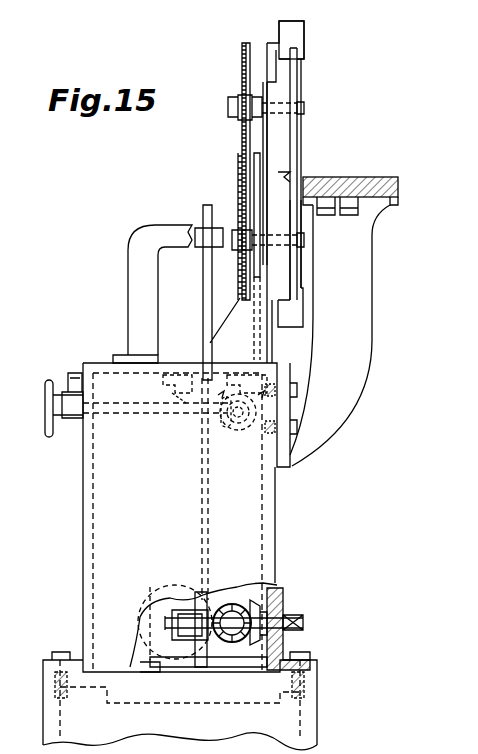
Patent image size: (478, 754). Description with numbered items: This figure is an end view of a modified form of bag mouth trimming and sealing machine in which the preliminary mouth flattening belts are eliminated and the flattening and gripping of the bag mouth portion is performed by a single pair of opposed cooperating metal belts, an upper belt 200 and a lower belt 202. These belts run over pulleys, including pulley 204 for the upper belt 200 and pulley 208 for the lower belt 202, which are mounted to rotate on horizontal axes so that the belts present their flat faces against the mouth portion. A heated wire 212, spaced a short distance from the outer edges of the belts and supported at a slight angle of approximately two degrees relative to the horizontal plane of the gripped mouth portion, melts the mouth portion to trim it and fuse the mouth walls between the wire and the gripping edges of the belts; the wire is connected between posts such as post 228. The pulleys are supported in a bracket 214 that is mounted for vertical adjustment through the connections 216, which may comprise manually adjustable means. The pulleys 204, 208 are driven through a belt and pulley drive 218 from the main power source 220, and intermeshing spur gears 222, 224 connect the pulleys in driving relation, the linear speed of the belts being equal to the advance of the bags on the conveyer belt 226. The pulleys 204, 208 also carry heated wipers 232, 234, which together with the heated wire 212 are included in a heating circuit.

The upper belt 200 is at (295, 86).
The lower belt 202 is at (293, 258).
The pulley 204 is at (301, 72).
The pulley 208 is at (299, 273).
The heated wire 212 is at (286, 176).
The bracket 214 is at (268, 133).
The connections 216 is at (237, 432).
The belt and pulley drive 218 is at (203, 325).
The main power source 220 is at (168, 597).
The spur gear 222 is at (242, 68).
The spur gear 224 is at (242, 275).
The conveyer belt 226 is at (362, 178).
The post 228 is at (132, 293).
The heated wiper 232 is at (298, 36).
The heated wiper 234 is at (295, 320).